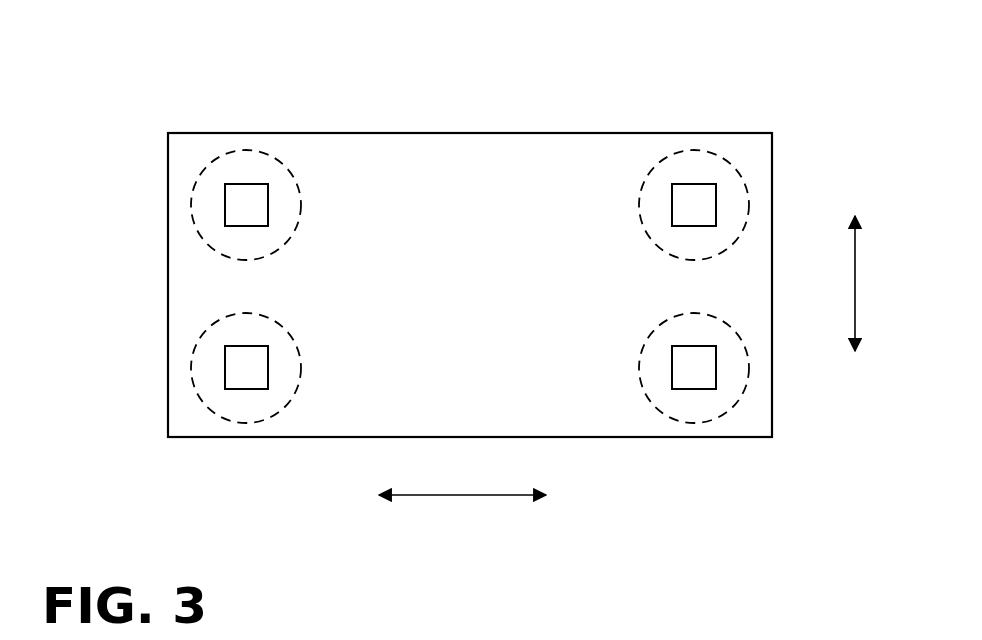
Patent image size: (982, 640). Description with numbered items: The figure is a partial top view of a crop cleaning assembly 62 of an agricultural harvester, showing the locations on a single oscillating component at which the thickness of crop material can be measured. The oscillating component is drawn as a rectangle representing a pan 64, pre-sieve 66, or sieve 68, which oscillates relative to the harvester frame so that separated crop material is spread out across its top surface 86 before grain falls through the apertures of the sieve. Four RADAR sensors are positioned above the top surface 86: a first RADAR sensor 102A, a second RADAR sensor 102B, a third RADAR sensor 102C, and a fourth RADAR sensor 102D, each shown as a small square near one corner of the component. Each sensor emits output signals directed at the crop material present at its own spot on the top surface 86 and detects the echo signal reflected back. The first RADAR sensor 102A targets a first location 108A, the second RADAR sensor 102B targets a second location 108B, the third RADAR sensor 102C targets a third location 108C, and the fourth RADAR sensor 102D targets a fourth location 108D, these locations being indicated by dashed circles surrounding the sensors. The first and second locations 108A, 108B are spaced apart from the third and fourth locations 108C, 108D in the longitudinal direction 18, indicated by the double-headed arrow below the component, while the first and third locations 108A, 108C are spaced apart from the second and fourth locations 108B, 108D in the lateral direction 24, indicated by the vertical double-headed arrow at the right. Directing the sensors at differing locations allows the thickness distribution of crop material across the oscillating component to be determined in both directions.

The crop cleaning assembly 62 is at (122, 98).
The pan 64 is at (393, 285).
The pre-sieve 66 is at (393, 285).
The sieve 68 is at (160, 274).
The top surface 86 is at (466, 288).
The first RADAR sensor 102A is at (246, 184).
The second RADAR sensor 102B is at (246, 389).
The third RADAR sensor 102C is at (694, 184).
The fourth RADAR sensor 102D is at (694, 389).
The first location 108A is at (292, 173).
The second location 108B is at (288, 400).
The third location 108C is at (647, 173).
The fourth location 108D is at (650, 400).
The longitudinal direction 18 is at (467, 497).
The lateral direction 24 is at (855, 273).